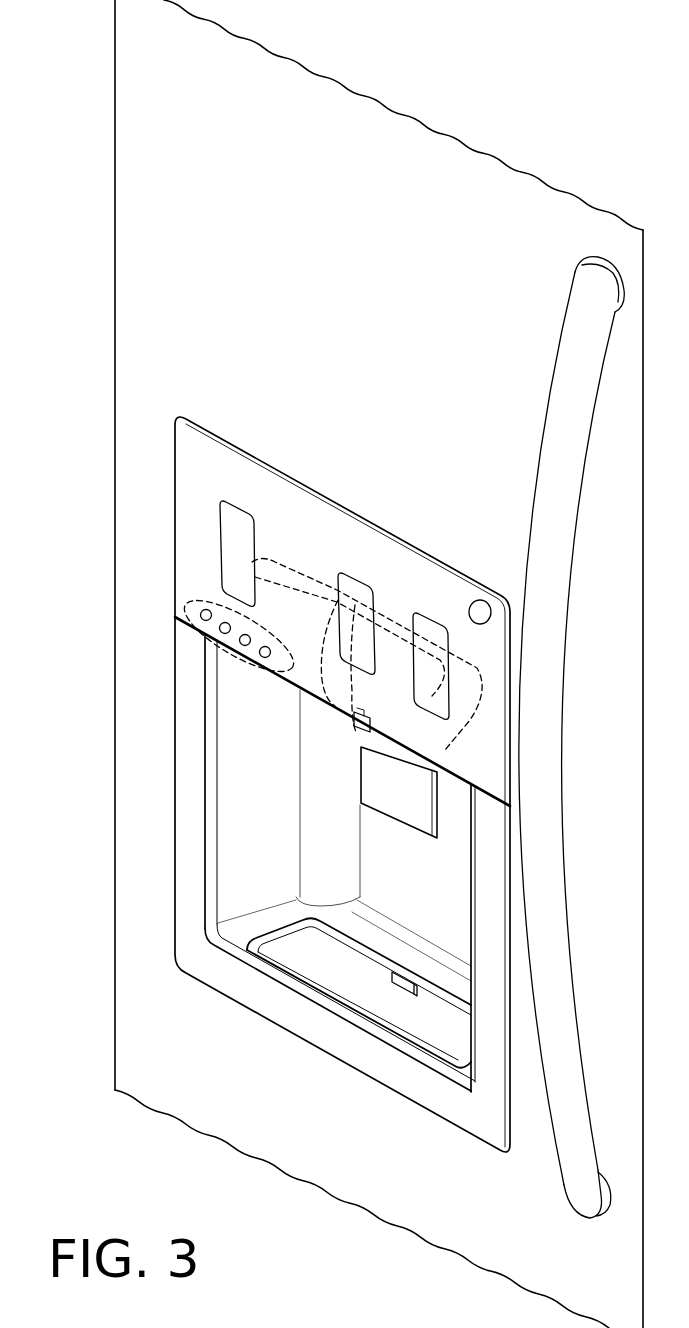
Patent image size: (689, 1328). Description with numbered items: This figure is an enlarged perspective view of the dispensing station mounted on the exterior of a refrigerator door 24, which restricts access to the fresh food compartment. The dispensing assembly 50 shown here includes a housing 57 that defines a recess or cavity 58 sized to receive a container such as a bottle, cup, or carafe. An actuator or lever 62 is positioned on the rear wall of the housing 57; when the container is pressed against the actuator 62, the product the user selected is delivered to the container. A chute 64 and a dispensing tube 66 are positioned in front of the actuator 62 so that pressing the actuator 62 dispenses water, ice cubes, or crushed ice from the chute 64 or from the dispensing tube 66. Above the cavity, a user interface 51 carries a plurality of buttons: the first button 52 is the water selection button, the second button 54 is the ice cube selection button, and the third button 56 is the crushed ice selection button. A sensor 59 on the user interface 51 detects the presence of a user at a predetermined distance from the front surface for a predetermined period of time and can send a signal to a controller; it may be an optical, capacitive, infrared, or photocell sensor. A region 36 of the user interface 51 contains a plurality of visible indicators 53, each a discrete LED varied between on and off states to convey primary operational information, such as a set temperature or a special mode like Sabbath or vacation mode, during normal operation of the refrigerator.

The door 24 is at (175, 171).
The region of the user interface 36 is at (183, 606).
The dispensing assembly 50 is at (213, 1007).
The user interface 51 is at (329, 556).
The first button 52 is at (232, 549).
The visible indicators 53 is at (245, 647).
The second button 54 is at (357, 590).
The third button 56 is at (431, 632).
The housing 57 is at (227, 870).
The recess or cavity 58 is at (238, 840).
The sensor 59 is at (486, 602).
The actuator or lever 62 is at (408, 822).
The chute 64 is at (320, 802).
The dispensing tube 66 is at (342, 726).